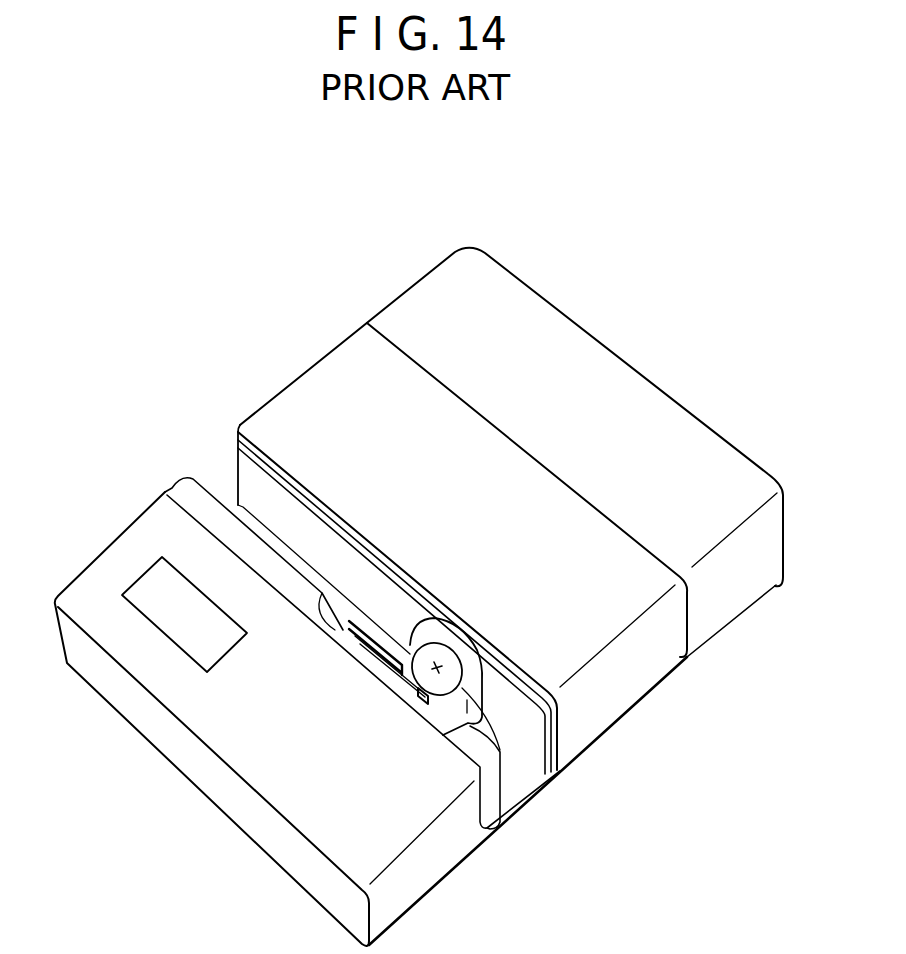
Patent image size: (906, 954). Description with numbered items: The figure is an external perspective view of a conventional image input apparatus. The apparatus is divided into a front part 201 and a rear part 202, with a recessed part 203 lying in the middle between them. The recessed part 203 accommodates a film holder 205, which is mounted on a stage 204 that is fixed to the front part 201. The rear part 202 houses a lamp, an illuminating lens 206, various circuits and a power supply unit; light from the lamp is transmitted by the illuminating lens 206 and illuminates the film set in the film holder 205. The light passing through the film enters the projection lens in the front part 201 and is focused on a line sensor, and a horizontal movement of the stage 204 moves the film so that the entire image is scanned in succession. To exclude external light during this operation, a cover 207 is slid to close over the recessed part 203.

The front part 201 is at (118, 548).
The rear part 202 is at (452, 280).
The recessed part 203 is at (230, 422).
The stage 204 is at (412, 690).
The film holder 205 is at (360, 630).
The illuminating lens 206 is at (453, 680).
The cover 207 is at (620, 692).